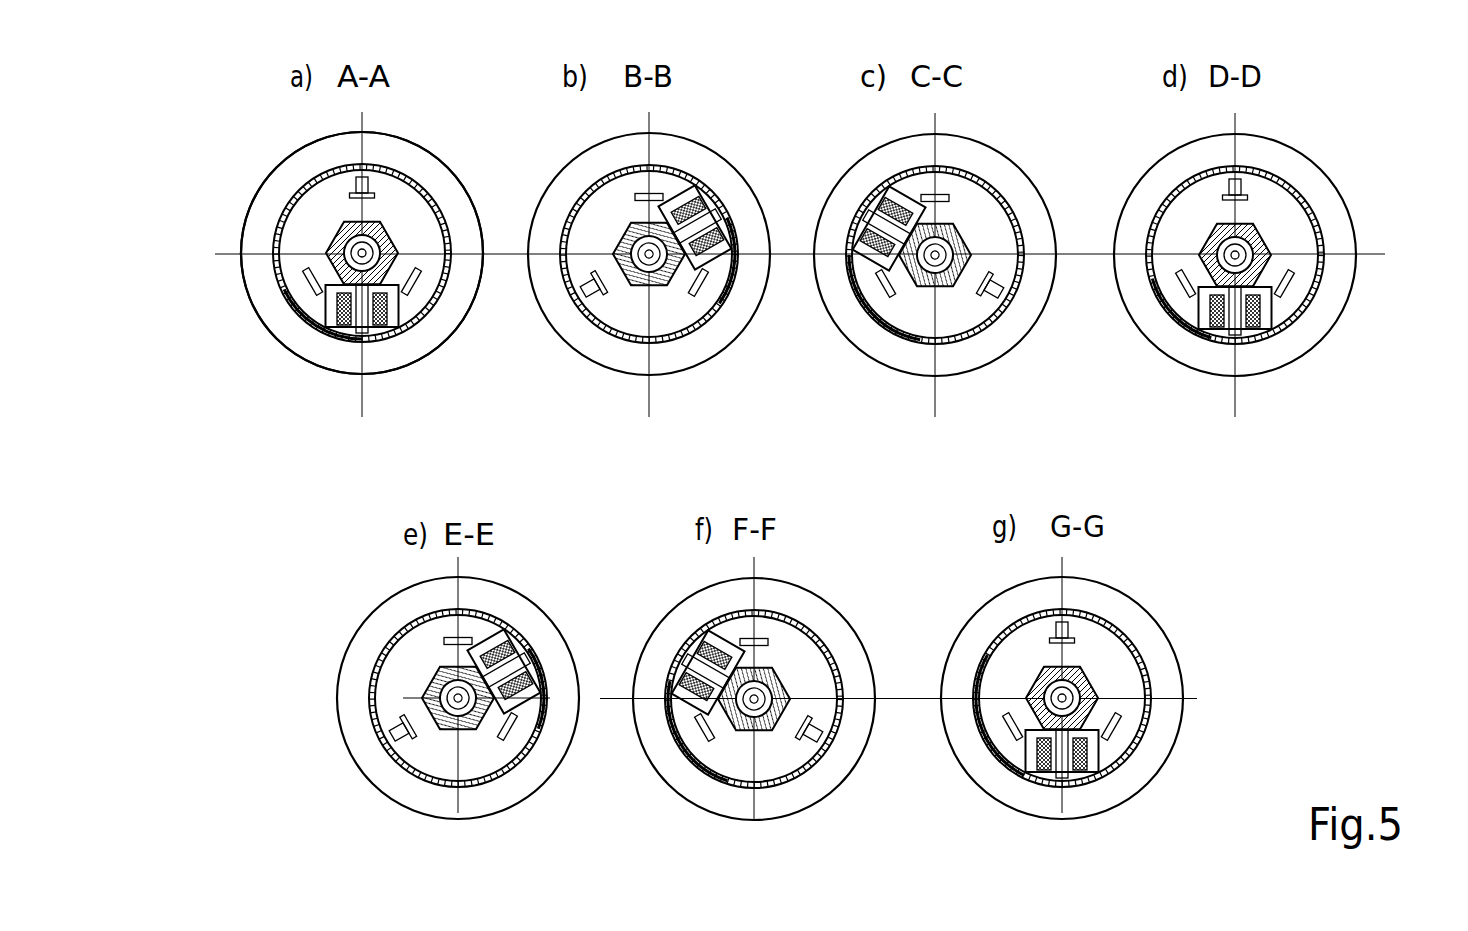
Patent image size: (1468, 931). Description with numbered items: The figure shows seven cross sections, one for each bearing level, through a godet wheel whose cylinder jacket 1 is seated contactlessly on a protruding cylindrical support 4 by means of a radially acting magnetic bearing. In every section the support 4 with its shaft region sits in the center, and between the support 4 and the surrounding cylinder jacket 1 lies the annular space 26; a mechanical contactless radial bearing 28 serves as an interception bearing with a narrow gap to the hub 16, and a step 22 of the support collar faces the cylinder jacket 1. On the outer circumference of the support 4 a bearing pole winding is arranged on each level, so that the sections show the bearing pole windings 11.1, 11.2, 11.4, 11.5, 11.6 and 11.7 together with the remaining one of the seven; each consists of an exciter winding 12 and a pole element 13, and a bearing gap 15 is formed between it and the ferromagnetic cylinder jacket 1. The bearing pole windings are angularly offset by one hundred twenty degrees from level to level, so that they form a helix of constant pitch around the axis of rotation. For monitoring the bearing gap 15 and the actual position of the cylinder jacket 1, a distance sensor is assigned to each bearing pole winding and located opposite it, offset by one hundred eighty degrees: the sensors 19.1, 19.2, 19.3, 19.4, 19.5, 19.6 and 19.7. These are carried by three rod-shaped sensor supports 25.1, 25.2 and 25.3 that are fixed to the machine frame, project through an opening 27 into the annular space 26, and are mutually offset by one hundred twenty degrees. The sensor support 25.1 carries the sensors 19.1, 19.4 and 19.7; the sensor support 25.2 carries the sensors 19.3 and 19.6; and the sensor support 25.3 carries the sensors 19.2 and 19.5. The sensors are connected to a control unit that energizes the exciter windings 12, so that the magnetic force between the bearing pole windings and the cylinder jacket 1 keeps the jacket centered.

The cylinder jacket 1 is at (463, 183).
The support 4 is at (343, 237).
The step 22 is at (253, 230).
The annular space 26 is at (303, 223).
The opening 27 is at (303, 290).
The hub 16 is at (430, 290).
The sensor 19.1 is at (370, 182).
The sensor 19.2 is at (597, 298).
The sensor 19.3 is at (1000, 297).
The sensor 19.4 is at (1243, 183).
The sensor 19.5 is at (397, 740).
The sensor 19.6 is at (820, 740).
The sensor 19.7 is at (1063, 627).
The sensor support 25.1 is at (377, 193).
The sensor support 25.2 is at (602, 303).
The sensor support 25.3 is at (986, 272).
The radial bearing 28 is at (400, 317).
The exciter winding 12 is at (383, 327).
The bearing gap 15 is at (333, 327).
The pole element 13 is at (370, 327).
The bearing pole winding 11.1 is at (322, 303).
The bearing pole winding 11.2 is at (718, 270).
The bearing pole winding 11.4 is at (1287, 298).
The bearing pole winding 11.5 is at (523, 717).
The bearing pole winding 11.6 is at (697, 730).
The bearing pole winding 11.7 is at (1115, 738).